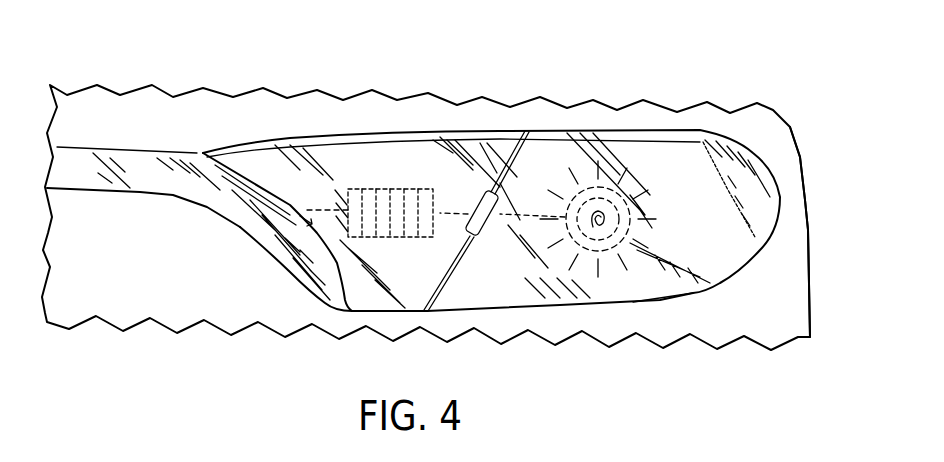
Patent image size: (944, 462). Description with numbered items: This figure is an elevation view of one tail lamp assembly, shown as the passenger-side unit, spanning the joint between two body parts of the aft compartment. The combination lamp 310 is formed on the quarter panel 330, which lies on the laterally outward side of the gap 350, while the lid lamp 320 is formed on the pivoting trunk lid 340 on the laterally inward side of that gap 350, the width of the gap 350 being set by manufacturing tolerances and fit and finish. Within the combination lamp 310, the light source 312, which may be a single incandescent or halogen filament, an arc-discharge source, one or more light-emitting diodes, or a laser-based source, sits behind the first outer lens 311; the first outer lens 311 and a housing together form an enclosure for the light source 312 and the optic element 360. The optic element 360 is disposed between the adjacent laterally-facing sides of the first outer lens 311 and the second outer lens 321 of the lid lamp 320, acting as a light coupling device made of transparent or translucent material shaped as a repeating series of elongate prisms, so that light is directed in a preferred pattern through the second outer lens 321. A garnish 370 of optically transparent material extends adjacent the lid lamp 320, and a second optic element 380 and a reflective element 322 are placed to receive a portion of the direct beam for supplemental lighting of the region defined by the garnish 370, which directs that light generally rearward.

The combination lamp 310 is at (662, 116).
The first outer lens 311 is at (627, 278).
The light source 312 is at (565, 222).
The lid lamp 320 is at (338, 116).
The second outer lens 321 is at (318, 230).
The reflective element 322 is at (370, 187).
The quarter panel 330 is at (792, 250).
The trunk lid 340 is at (155, 107).
The gap 350 is at (533, 120).
The optic element 360 is at (482, 207).
The garnish 370 is at (80, 170).
The second optic element 380 is at (253, 202).